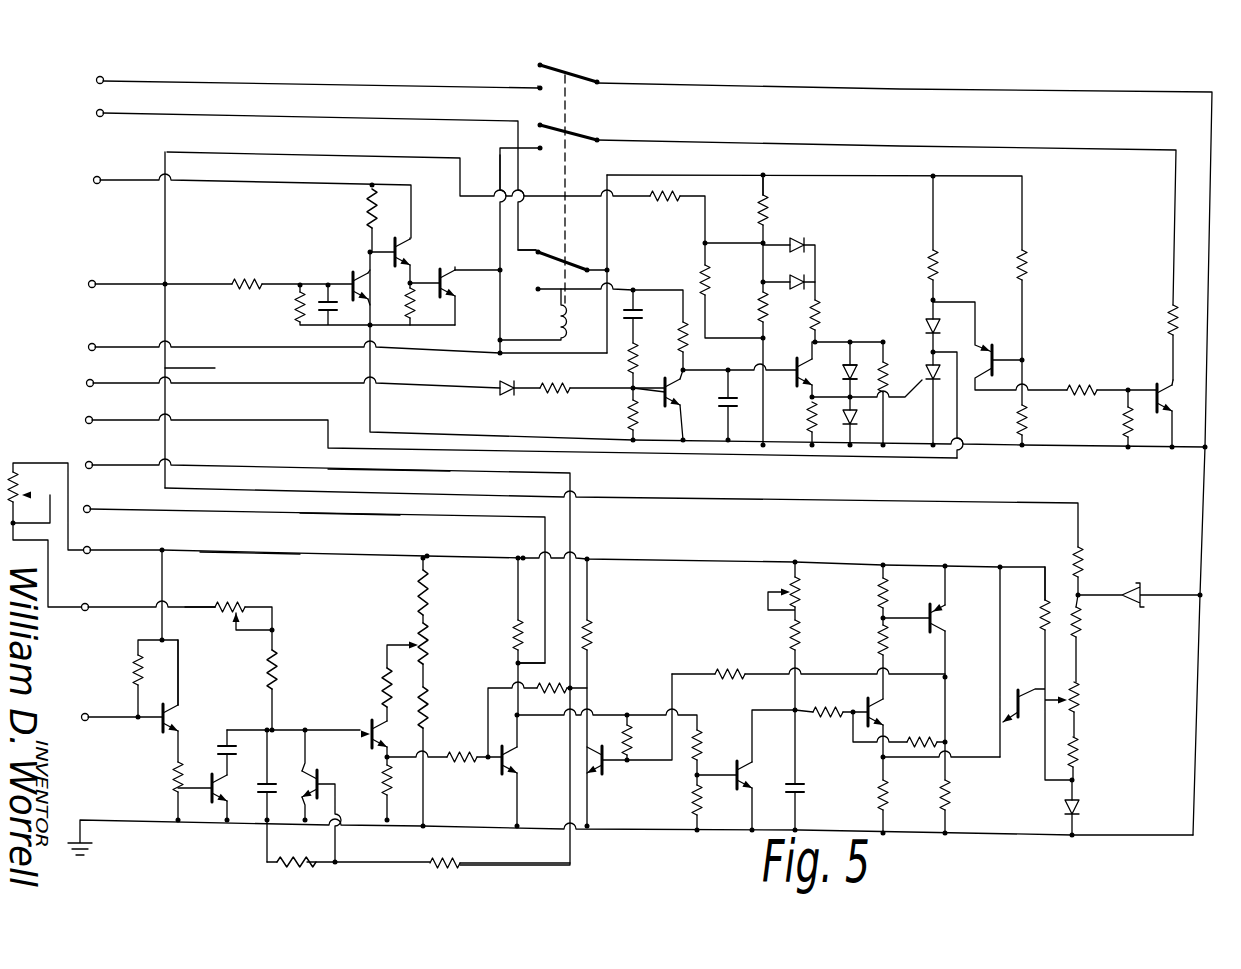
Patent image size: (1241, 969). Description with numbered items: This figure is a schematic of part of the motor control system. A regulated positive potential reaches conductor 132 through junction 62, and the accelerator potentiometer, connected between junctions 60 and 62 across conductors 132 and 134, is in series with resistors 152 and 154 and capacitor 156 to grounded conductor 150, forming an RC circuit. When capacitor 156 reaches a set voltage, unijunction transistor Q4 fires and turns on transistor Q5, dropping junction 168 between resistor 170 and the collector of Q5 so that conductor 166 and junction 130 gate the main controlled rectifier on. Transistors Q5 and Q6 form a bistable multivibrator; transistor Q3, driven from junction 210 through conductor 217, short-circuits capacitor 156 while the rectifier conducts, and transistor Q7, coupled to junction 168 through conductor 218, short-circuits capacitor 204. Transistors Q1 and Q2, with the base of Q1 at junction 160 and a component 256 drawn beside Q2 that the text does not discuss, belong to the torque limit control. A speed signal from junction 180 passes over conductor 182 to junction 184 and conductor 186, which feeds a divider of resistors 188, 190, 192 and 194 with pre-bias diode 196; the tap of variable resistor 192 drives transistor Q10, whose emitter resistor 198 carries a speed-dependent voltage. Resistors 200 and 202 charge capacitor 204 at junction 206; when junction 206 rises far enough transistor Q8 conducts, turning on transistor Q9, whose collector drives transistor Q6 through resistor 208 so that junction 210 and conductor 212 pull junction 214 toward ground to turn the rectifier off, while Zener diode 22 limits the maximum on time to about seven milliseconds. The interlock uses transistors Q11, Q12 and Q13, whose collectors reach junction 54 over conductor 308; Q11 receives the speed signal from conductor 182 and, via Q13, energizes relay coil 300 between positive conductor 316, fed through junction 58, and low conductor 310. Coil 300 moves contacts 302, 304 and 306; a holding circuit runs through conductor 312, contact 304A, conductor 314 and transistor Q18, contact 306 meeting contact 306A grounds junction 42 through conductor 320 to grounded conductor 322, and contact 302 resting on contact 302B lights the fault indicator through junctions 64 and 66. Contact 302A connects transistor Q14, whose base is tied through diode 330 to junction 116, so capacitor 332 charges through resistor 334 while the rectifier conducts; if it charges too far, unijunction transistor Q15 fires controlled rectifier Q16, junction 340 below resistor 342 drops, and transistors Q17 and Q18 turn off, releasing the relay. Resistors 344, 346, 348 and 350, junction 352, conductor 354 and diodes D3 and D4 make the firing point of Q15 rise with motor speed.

The junction 42 is at (97, 77).
The conductor 320 is at (213, 80).
The fixed contact 306A is at (538, 85).
The movable contact 306 is at (560, 63).
The grounded conductor 322 is at (1028, 90).
The junction 64 is at (97, 112).
The movable contact 304 is at (560, 125).
The conductor 314 is at (995, 148).
The lower contact 304A is at (545, 150).
The conductor 354 is at (270, 152).
The conductor 312 is at (498, 165).
The junction 54 is at (94, 179).
The conductor 308 is at (312, 186).
The conductor 316 is at (813, 175).
The junction 184 is at (160, 282).
The junction 180 is at (88, 280).
The conductor 182 is at (133, 285).
The transistor Q11 is at (345, 280).
The transistor Q12 is at (408, 248).
The transistor Q13 is at (450, 290).
The conductor 310 is at (530, 435).
The junction 58 is at (89, 346).
The conductor 186 is at (918, 485).
The junction 116 is at (87, 382).
The diode 330 is at (503, 384).
The junction 66 is at (85, 419).
The junction 214 is at (86, 463).
The conductor 212 is at (325, 468).
The junction 130 is at (88, 506).
The conductor 166 is at (345, 514).
The junction 62 is at (92, 548).
The conductor 132 is at (245, 553).
The junction 60 is at (87, 604).
The conductor 134 is at (185, 607).
The resistor 152 is at (250, 604).
The resistor 154 is at (275, 665).
The junction 160 is at (85, 714).
The transistor Q1 is at (173, 710).
The transistor Q2 is at (226, 800).
The capacitor 256 is at (220, 746).
The capacitor 156 is at (276, 782).
The transistor Q3 is at (330, 766).
The unijunction transistor Q4 is at (373, 720).
The transistor Q5 is at (507, 773).
The junction 168 is at (518, 663).
The resistor 170 is at (517, 622).
The conductor 217 is at (567, 862).
The junction 210 is at (593, 687).
The transistor Q6 is at (604, 768).
The conductor 218 is at (607, 717).
The transistor Q7 is at (738, 760).
The capacitor 204 is at (800, 792).
The junction 206 is at (805, 718).
The transistor Q8 is at (873, 710).
The resistor 198 is at (887, 812).
The transistor Q9 is at (943, 622).
The resistor 208 is at (733, 670).
The resistor 200 is at (800, 590).
The resistor 202 is at (800, 648).
The transistor Q10 is at (1010, 720).
The resistor 188 is at (1080, 548).
The Zener diode 22 is at (1130, 588).
The resistor 190 is at (1083, 627).
The variable resistor 192 is at (1082, 687).
The resistor 194 is at (1082, 748).
The diode 196 is at (1087, 808).
The grounded power supply conductor 150 is at (115, 820).
The fixed contact 302B is at (538, 250).
The movable contact 302 is at (570, 260).
The fixed contact 302A is at (538, 287).
The relay coil 300 is at (557, 319).
The resistor 334 is at (682, 322).
The resistor 350 is at (680, 207).
The junction 352 is at (705, 240).
The resistor 348 is at (712, 300).
The resistor 346 is at (760, 310).
The resistor 344 is at (766, 198).
The diode D3 is at (802, 237).
The diode D4 is at (802, 273).
The unijunction transistor Q15 is at (823, 362).
The resistor 342 is at (935, 248).
The junction 340 is at (935, 300).
The controlled rectifier Q16 is at (938, 378).
The transistor Q17 is at (997, 352).
The transistor Q18 is at (1163, 383).
The transistor Q14 is at (679, 392).
The capacitor 332 is at (731, 408).